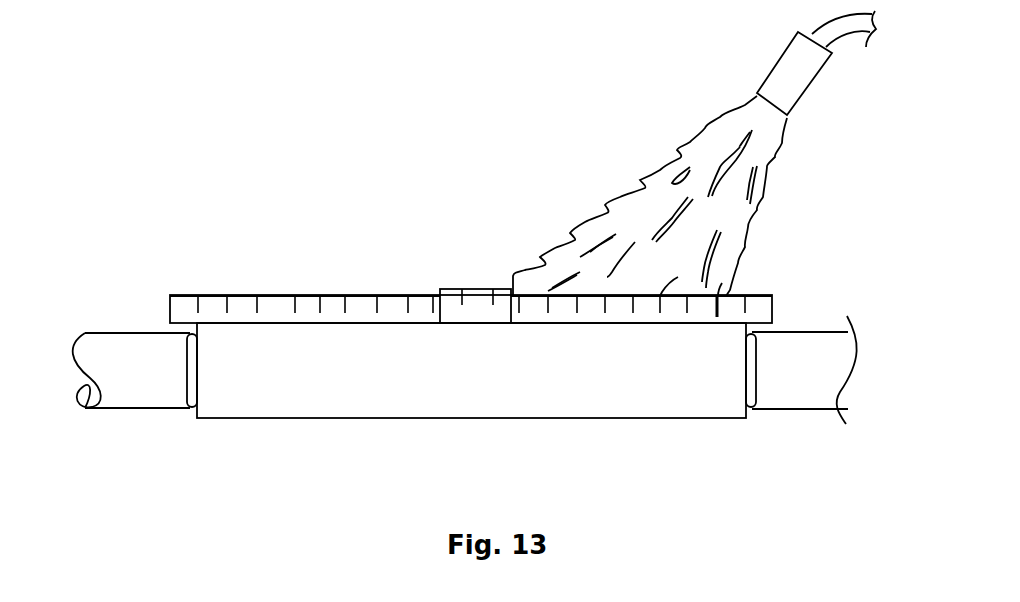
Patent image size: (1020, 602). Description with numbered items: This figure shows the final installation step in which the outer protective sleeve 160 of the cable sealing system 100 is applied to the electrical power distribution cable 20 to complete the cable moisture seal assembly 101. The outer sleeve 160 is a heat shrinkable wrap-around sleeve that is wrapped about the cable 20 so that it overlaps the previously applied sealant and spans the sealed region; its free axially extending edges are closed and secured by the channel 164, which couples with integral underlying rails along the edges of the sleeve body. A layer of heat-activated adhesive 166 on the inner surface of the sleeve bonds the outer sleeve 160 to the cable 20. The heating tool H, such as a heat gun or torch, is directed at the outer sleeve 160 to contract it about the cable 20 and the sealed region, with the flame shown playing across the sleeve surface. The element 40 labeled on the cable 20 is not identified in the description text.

The pipe 20 is at (140, 408).
The pipe coating 40 is at (121, 340).
The pipe joint assembly 100 is at (326, 258).
The heating process 101 is at (411, 183).
The heat shrink sleeve 160 is at (470, 419).
The closure strip 164 is at (394, 295).
The end seal 166 is at (190, 387).
The heat source torch H is at (783, 68).